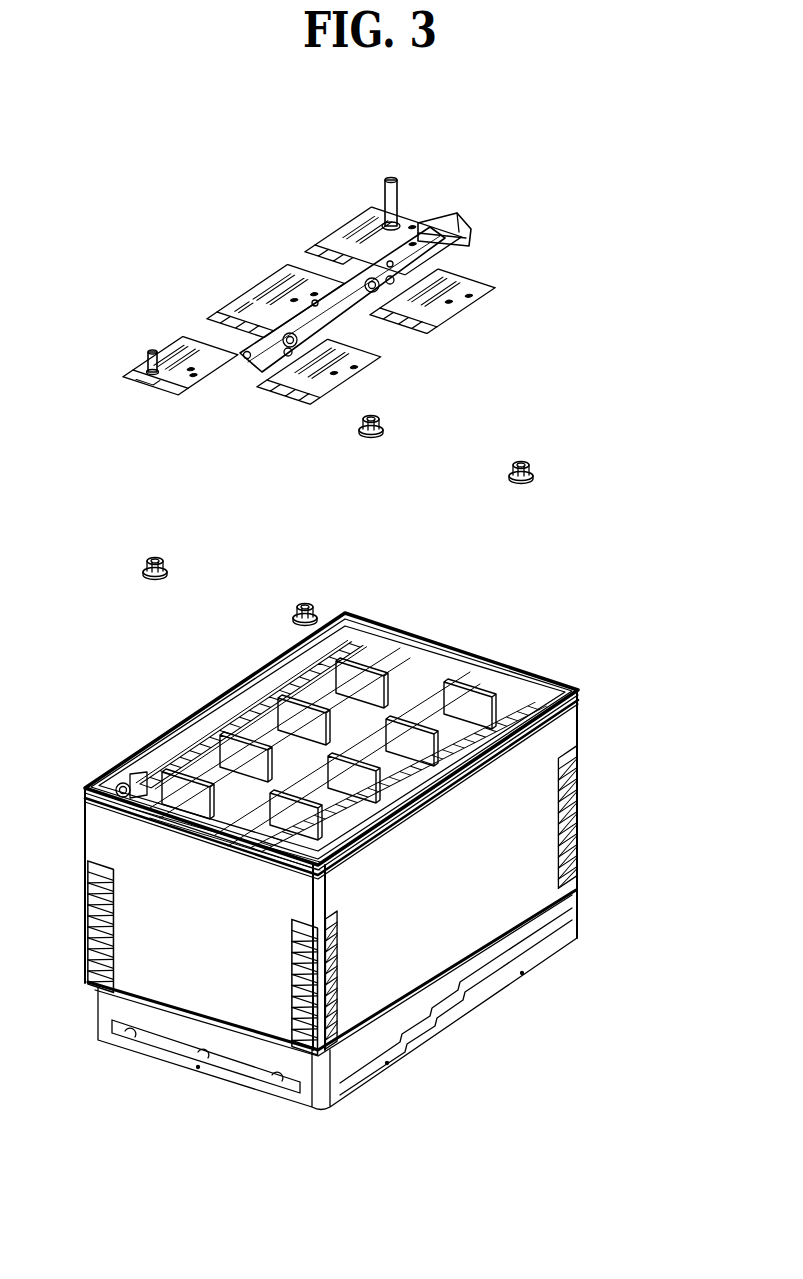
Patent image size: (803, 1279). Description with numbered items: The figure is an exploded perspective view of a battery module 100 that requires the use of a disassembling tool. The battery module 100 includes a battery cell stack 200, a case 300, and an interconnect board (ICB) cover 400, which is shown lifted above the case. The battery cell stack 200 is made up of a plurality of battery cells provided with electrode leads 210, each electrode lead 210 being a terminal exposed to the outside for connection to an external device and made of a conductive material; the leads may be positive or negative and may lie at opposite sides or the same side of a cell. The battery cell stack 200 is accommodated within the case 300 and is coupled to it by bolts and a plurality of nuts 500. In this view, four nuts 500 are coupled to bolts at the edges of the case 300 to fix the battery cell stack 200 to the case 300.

The battery module 100 is at (184, 148).
The battery cell stack 200 is at (473, 634).
The electrode lead 210 is at (385, 668).
The case 300 is at (565, 737).
The interconnect board (ICB) cover 400 is at (407, 216).
The nut 500 is at (150, 560).